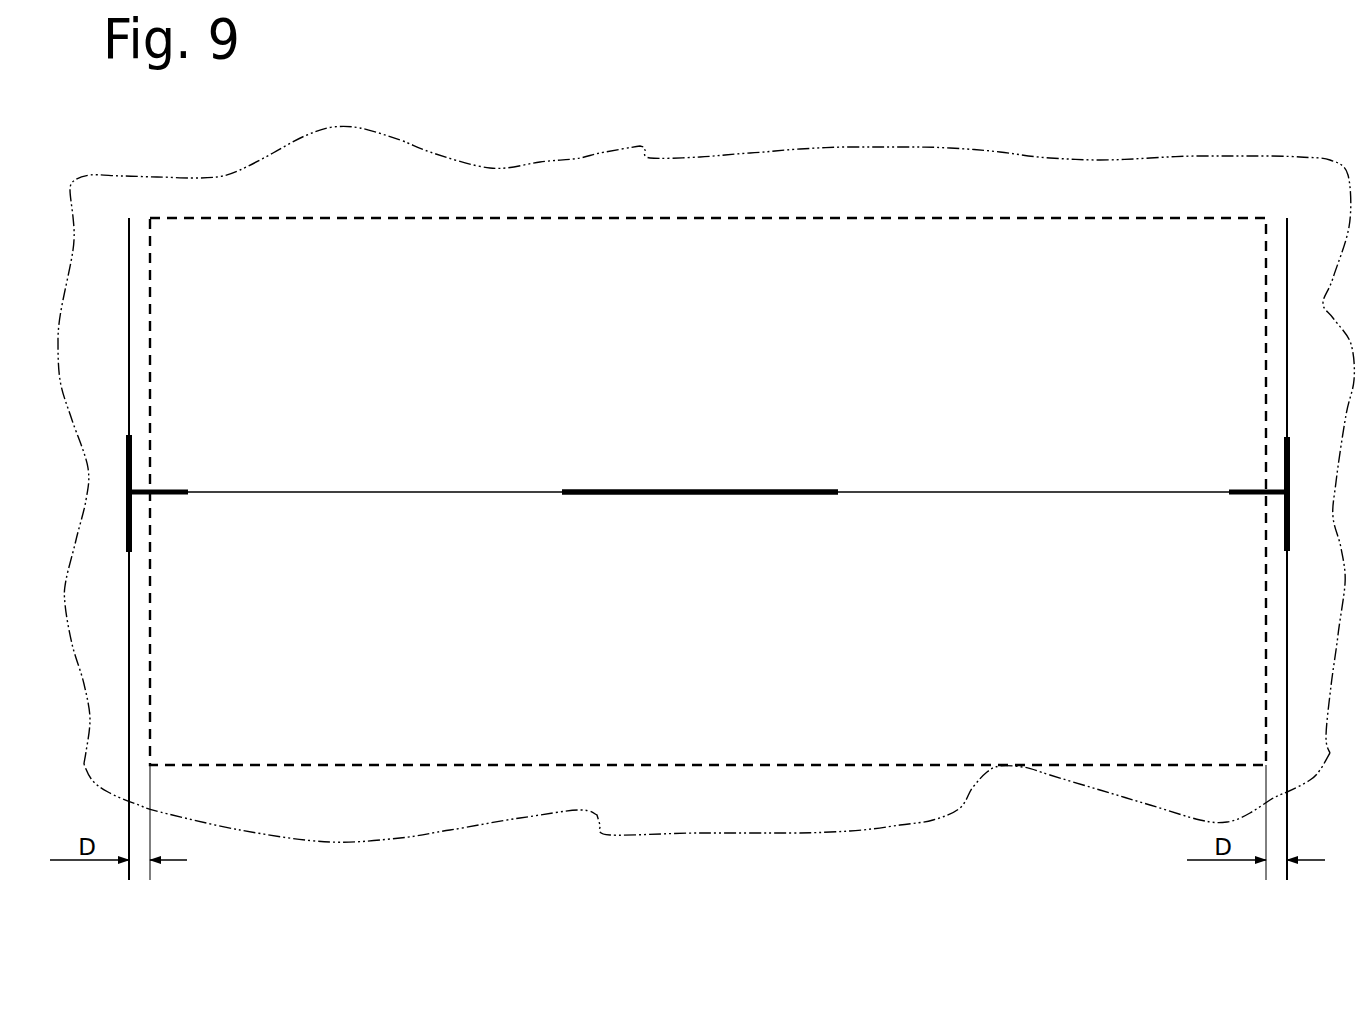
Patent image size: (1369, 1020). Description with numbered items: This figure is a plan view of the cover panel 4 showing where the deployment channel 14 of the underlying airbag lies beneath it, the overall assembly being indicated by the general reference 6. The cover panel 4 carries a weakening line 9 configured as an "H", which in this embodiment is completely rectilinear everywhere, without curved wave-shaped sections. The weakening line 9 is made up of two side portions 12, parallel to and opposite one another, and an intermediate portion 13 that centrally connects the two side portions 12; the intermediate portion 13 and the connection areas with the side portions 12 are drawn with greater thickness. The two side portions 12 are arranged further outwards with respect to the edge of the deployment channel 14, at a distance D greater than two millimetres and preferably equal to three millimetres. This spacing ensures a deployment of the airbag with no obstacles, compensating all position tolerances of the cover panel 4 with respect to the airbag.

The cover panel 4 is at (790, 190).
The sensor device 6 is at (1197, 101).
The weakening line 9 is at (388, 812).
The side portions 12 is at (205, 401).
The intermediate portion 13 is at (684, 454).
The deployment channel 14 is at (762, 767).